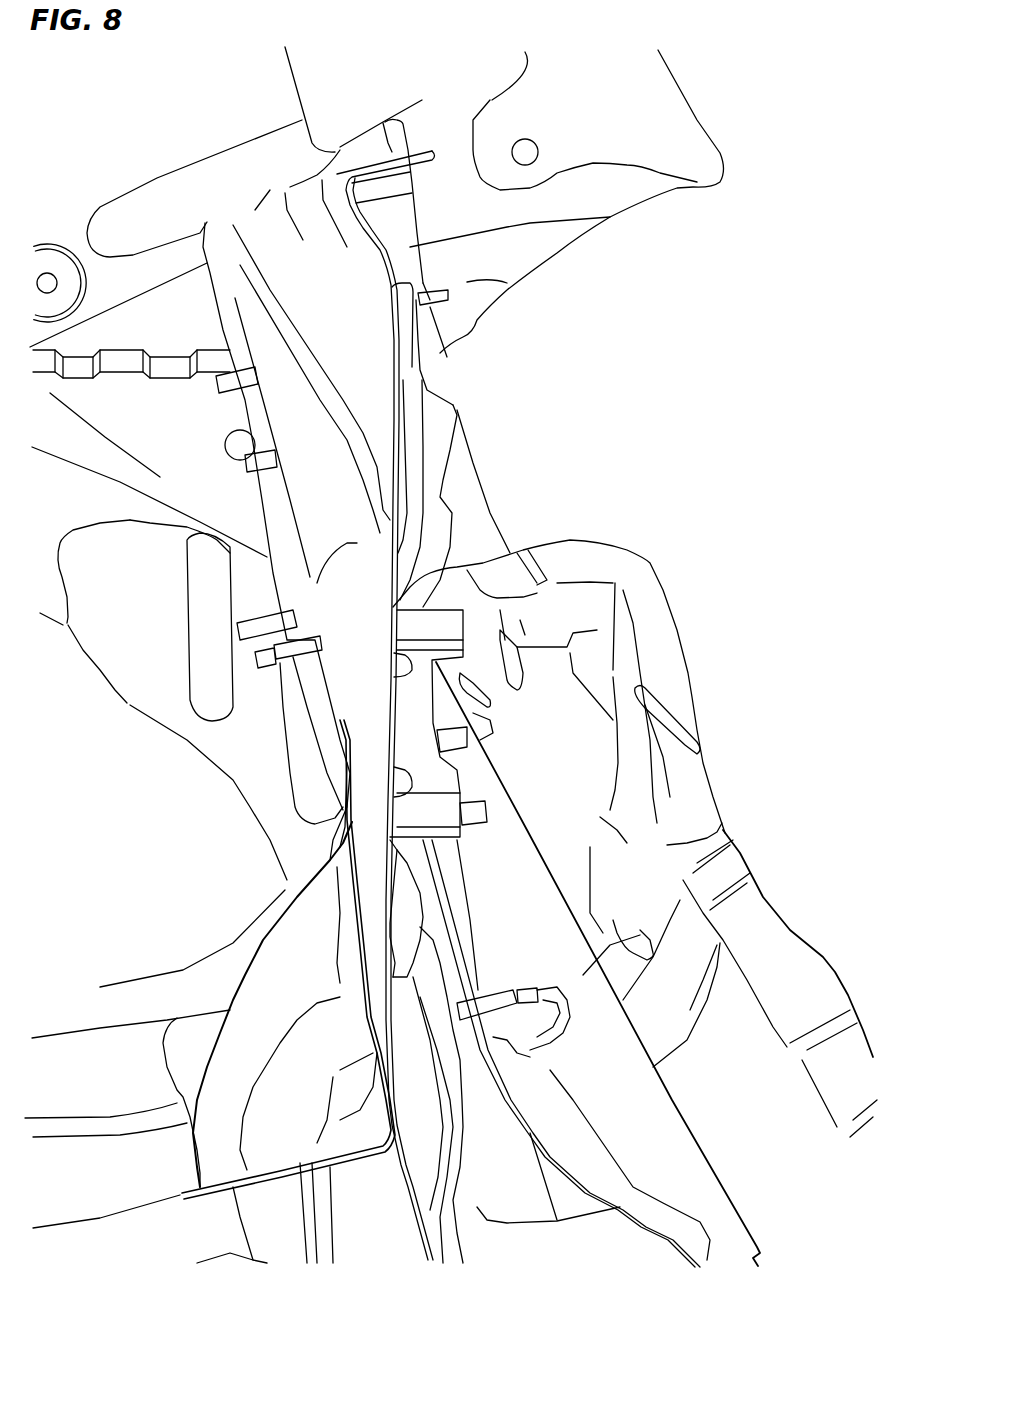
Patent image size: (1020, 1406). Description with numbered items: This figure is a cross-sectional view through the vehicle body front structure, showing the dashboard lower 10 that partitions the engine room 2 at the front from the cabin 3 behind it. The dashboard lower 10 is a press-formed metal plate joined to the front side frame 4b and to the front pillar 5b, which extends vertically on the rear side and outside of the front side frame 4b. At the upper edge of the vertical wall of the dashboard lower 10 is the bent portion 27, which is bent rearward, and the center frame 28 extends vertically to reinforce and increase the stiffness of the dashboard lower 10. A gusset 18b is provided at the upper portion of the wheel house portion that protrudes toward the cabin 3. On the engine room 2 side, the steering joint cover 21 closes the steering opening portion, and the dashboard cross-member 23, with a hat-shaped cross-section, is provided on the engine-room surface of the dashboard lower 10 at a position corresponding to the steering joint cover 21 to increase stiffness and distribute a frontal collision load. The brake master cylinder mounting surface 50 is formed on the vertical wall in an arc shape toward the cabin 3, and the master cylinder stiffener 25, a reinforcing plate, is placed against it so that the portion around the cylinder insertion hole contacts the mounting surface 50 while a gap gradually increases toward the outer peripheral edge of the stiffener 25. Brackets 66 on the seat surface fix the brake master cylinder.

The engine room 2 is at (58, 766).
The cabin 3 is at (651, 493).
The front side frame 4b is at (107, 1187).
The front pillar 5b is at (672, 130).
The dashboard lower 10 is at (741, 846).
The gusset 18b is at (600, 607).
The steering joint cover 21 is at (300, 947).
The dashboard cross-member 23 is at (340, 1233).
The master cylinder stiffener 25 is at (460, 412).
The bent portion 27 is at (272, 198).
The center frame 28 is at (647, 1117).
The brake master cylinder mounting surface 50 is at (330, 493).
The bracket 66 is at (408, 710).